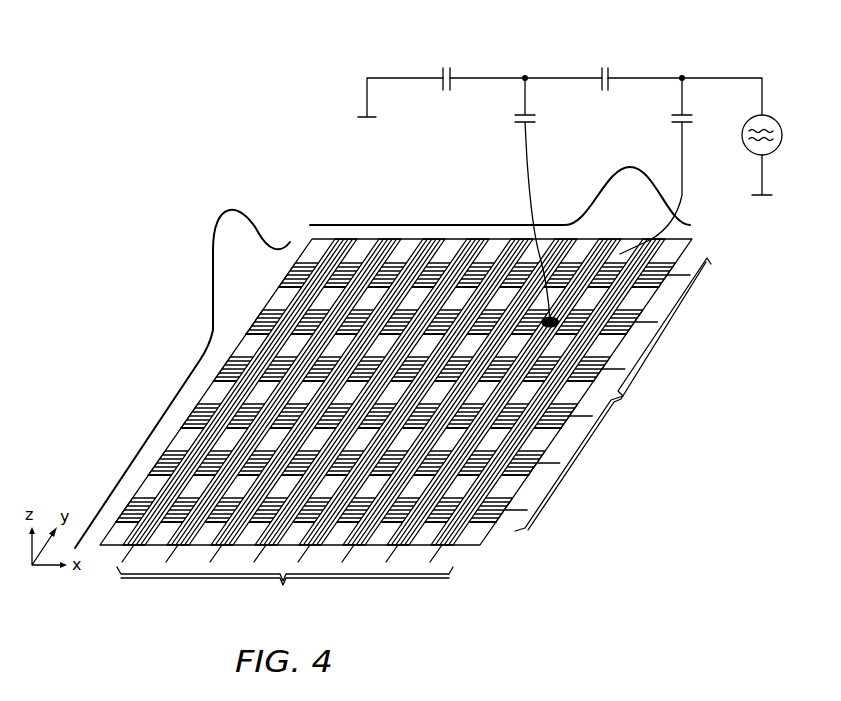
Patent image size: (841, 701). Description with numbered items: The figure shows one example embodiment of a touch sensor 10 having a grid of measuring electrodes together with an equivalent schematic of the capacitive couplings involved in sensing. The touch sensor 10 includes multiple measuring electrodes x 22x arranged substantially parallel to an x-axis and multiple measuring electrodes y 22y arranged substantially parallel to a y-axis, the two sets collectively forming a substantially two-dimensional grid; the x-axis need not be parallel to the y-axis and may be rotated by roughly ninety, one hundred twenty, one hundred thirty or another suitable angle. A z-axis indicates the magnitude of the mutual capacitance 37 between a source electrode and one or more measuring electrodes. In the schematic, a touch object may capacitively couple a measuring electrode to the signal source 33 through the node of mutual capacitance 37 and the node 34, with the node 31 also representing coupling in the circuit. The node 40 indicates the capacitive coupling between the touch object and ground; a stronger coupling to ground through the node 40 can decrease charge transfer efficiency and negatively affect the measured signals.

The touch sensor 10 is at (243, 91).
The measuring electrodes x 22x is at (391, 435).
The measuring electrodes y 22y is at (436, 394).
The node 31 is at (670, 117).
The signal source 33 is at (775, 118).
The node 34 is at (605, 65).
The mutual capacitance 37 is at (540, 118).
The node 40 is at (447, 93).